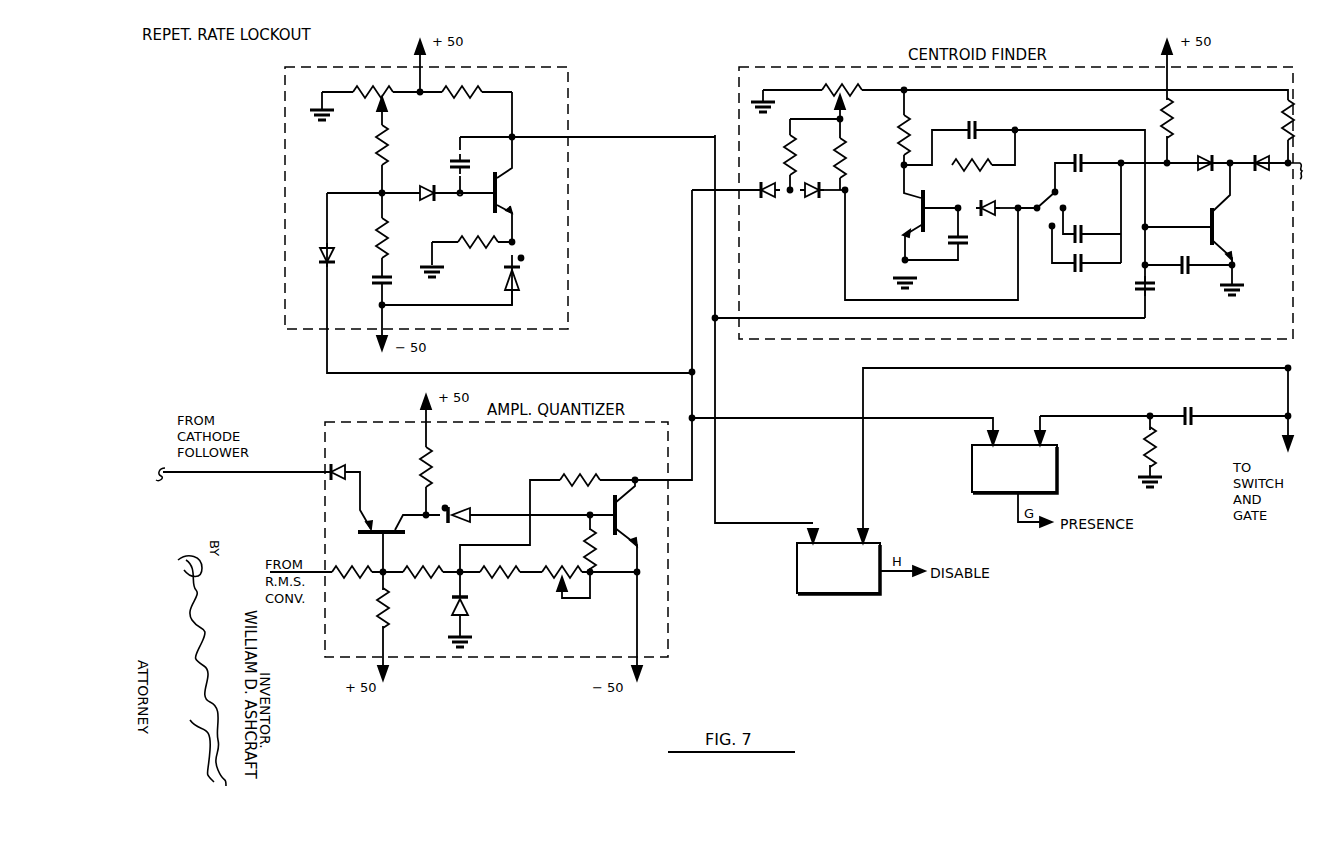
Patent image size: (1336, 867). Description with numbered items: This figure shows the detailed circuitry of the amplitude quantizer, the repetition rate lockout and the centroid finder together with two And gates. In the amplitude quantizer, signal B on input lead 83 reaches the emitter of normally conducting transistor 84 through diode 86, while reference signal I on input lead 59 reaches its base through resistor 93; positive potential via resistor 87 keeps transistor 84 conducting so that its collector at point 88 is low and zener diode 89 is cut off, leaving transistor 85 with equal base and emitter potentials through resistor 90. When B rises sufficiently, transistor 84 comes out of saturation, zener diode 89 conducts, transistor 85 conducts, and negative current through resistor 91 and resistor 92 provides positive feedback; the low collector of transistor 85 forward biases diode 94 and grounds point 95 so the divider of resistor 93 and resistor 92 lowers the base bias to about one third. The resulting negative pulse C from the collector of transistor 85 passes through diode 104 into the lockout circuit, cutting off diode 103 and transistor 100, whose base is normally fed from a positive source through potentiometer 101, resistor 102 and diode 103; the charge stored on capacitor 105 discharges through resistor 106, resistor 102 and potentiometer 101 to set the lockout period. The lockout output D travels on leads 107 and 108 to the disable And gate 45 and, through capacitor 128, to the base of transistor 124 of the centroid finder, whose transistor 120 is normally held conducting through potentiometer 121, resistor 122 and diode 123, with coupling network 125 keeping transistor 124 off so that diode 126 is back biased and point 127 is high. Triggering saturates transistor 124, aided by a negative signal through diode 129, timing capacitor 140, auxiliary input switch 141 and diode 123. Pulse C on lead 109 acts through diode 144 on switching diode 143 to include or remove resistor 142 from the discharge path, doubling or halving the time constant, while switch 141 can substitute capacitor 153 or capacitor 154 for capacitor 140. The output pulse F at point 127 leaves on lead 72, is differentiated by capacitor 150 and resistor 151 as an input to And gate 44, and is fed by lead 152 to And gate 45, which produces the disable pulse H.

The output And gate 44 is at (1058, 457).
The disable And gate 45 is at (798, 574).
The input lead 59 is at (332, 576).
The lead 72 is at (1282, 420).
The input lead 83 is at (242, 473).
The transistor 84 is at (388, 514).
The transistor 85 is at (620, 521).
The diode 86 is at (338, 471).
The resistor 87 is at (390, 606).
The point 88 is at (442, 514).
The zener diode 89 is at (470, 514).
The resistor 90 is at (588, 557).
The resistor 91 is at (588, 480).
The resistor 92 is at (428, 567).
The resistor 93 is at (350, 567).
The diode 94 is at (469, 615).
The point 95 is at (468, 572).
The transistor 100 is at (498, 192).
The potentiometer 101 is at (365, 90).
The resistor 102 is at (386, 148).
The diode 103 is at (428, 190).
The diode 104 is at (328, 250).
The capacitor 105 is at (380, 292).
The resistor 106 is at (384, 244).
The lead 107 is at (714, 282).
The lead 108 is at (812, 318).
The lead 109 is at (692, 214).
The transistor 120 is at (925, 197).
The potentiometer 121 is at (844, 90).
The resistor 122 is at (843, 160).
The diode 123 is at (982, 206).
The transistor 124 is at (1216, 229).
The parallel resistance-capacitance collector-to-base coupling network 125 is at (972, 160).
The diode 126 is at (1286, 154).
The point 127 is at (1270, 174).
The capacitor 128 is at (1139, 292).
The diode 129 is at (1207, 156).
The timing capacitor 140 is at (1083, 163).
The auxiliary input switch 141 is at (1043, 194).
The resistor 142 is at (790, 160).
The switching diode 143 is at (812, 200).
The diode 144 is at (766, 182).
The capacitor 150 is at (1195, 416).
The resistor 151 is at (1156, 455).
The lead 152 is at (938, 368).
The capacitor 153 is at (1084, 232).
The capacitor 154 is at (1078, 268).